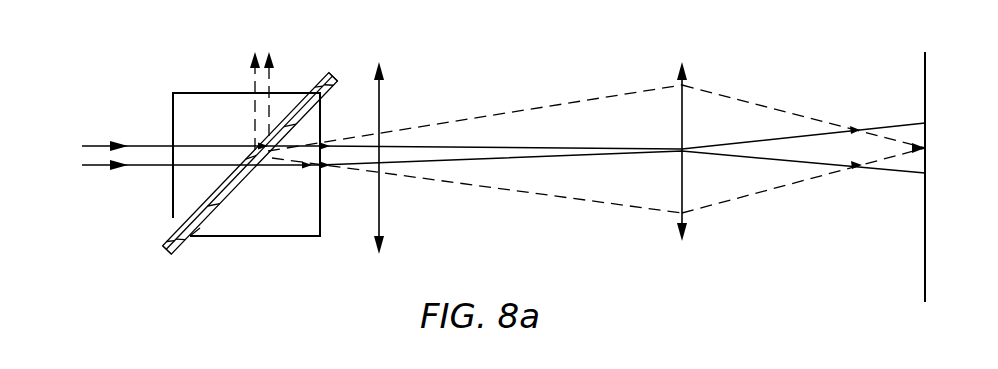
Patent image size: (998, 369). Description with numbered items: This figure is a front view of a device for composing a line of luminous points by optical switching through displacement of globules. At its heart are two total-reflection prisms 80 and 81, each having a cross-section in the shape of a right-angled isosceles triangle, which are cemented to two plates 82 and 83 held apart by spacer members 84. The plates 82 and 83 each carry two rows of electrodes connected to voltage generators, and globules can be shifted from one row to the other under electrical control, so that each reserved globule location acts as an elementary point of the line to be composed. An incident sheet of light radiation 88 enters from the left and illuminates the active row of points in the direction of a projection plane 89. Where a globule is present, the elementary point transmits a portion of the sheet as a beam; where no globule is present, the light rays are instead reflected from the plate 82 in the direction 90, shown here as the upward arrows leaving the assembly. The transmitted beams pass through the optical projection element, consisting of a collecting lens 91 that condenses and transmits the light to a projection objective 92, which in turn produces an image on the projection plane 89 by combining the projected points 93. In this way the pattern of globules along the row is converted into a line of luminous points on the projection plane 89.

The total-reflection prism 80 is at (177, 110).
The total-reflection prism 81 is at (293, 228).
The plate 82 is at (190, 216).
The plate 83 is at (200, 229).
The spacer member 84 is at (334, 79).
The incident sheet of light radiation 88 is at (97, 165).
The projection plane 89 is at (927, 83).
The reflection direction 90 is at (250, 72).
The collecting lens 91 is at (381, 215).
The projection objective 92 is at (678, 203).
The projected point 93 is at (930, 148).